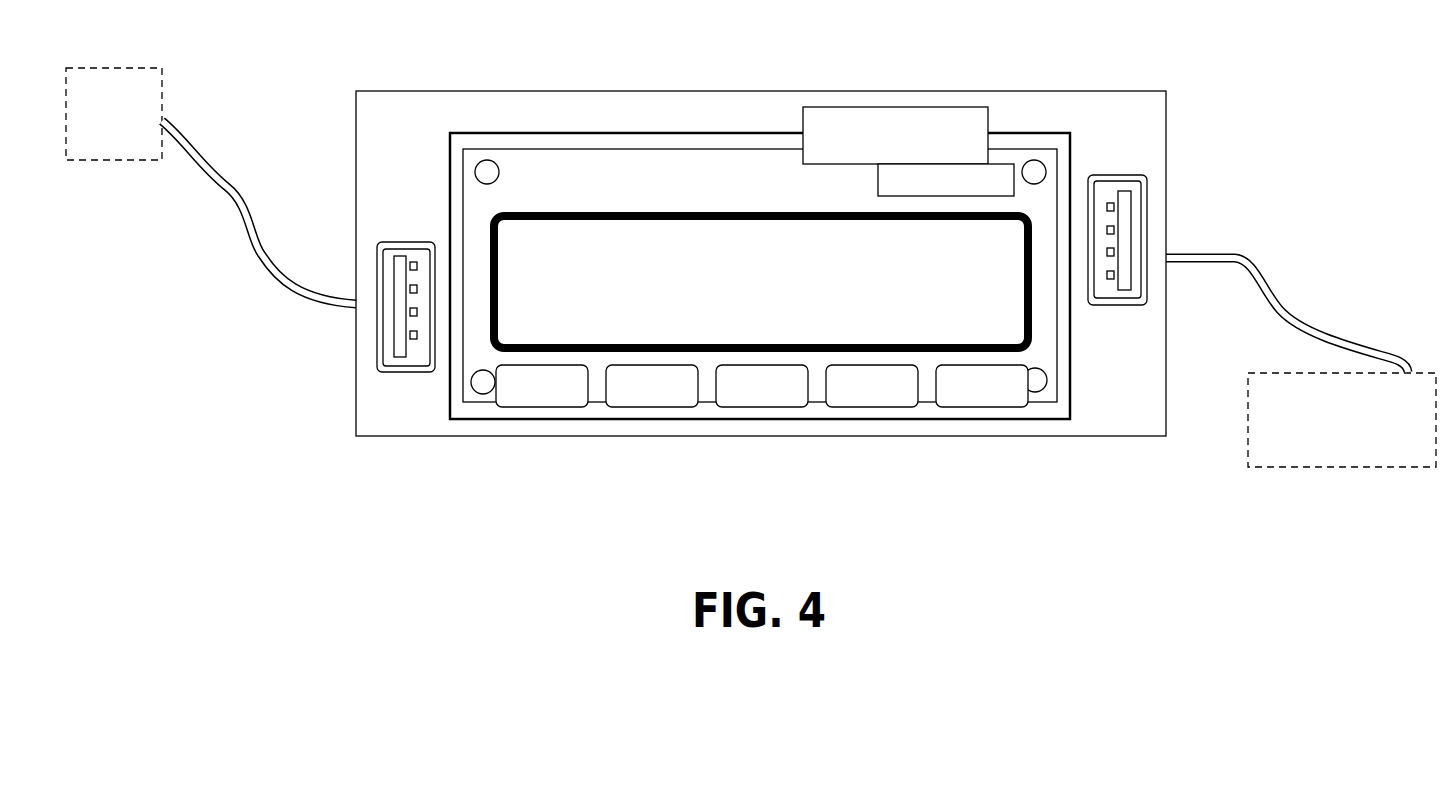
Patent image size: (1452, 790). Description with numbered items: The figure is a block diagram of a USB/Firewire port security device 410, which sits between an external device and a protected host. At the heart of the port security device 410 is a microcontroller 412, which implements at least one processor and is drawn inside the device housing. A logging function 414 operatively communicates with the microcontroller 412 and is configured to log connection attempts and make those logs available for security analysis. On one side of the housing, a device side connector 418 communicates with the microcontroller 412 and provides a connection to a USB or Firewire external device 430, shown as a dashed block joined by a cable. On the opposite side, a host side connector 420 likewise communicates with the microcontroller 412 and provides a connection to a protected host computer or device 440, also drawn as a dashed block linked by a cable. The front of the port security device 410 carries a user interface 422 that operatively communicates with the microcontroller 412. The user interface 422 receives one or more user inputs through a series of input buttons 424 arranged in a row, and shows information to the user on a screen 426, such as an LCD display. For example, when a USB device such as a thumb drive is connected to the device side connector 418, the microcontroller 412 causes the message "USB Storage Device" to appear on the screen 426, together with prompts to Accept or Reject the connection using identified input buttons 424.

The USB/Firewire port security device 410 is at (645, 91).
The microcontroller 412 is at (870, 106).
The logging function 414 is at (999, 163).
The device side connector 418 is at (399, 320).
The host side connector 420 is at (1128, 232).
The user interface 422 is at (455, 178).
The input buttons 424 is at (545, 408).
The screen 426 is at (712, 323).
The USB or Firewire external device 430 is at (85, 67).
The protected host computer or device 440 is at (1355, 468).